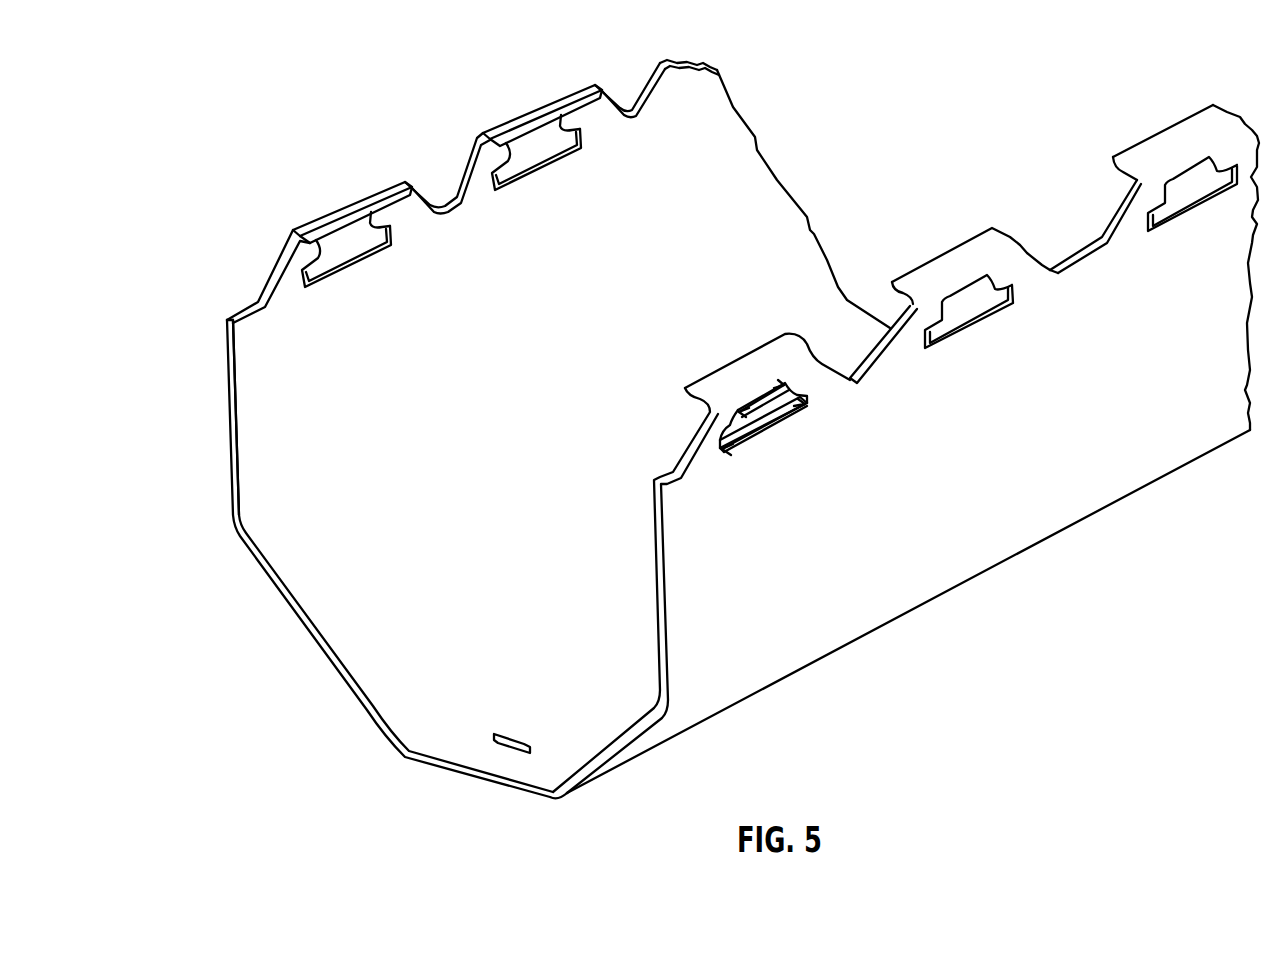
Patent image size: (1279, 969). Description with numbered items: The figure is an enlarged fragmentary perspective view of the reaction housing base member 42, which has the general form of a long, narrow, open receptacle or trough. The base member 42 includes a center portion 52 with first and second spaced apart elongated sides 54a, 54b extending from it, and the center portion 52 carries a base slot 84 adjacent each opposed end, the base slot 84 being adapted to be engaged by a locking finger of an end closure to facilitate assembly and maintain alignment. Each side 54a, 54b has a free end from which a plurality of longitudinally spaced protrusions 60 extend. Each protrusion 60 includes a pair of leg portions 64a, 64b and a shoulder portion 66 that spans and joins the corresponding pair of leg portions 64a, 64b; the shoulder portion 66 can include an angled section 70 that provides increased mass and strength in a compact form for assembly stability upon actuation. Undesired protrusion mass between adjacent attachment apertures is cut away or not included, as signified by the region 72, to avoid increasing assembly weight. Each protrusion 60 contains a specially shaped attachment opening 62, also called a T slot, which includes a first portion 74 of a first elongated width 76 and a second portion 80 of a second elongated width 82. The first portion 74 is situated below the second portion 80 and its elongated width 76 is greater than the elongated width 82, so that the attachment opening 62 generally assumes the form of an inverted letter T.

The base member 42 is at (443, 130).
The center portion 52 is at (460, 692).
The first elongated side 54a is at (1060, 470).
The second elongated side 54b is at (304, 353).
The protrusion 60 is at (740, 388).
The attachment opening 62 is at (958, 320).
The first leg portion 64a is at (915, 336).
The second leg portion 64b is at (1028, 270).
The shoulder portion 66 is at (957, 258).
The angled section 70 is at (1003, 241).
The cut-away protrusion mass region 72 is at (850, 345).
The first portion of attachment opening 74 is at (723, 453).
The first elongated width 76 is at (765, 410).
The second portion of attachment opening 80 is at (782, 384).
The second elongated width 82 is at (740, 408).
The base slot 84 is at (499, 735).